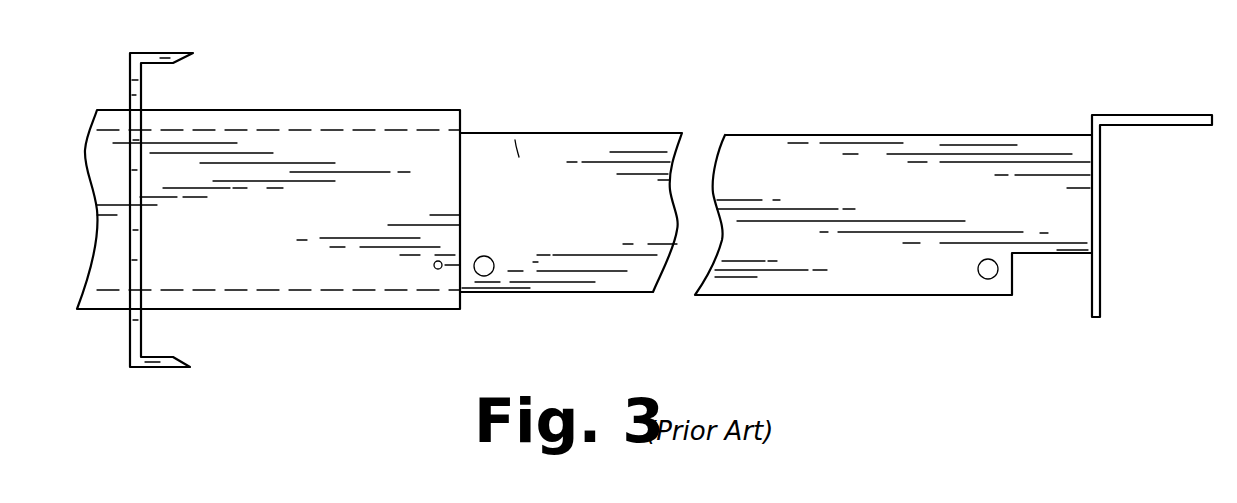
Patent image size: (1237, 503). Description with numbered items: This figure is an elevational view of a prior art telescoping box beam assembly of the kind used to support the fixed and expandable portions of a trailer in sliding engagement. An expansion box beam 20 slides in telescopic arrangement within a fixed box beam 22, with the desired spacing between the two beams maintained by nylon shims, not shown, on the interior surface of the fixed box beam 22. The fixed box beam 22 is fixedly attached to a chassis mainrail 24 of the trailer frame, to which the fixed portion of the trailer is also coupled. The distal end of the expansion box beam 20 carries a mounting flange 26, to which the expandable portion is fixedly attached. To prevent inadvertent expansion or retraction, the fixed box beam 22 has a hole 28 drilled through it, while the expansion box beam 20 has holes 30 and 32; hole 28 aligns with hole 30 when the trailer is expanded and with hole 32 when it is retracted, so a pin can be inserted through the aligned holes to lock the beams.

The expansion box beam 20 is at (572, 133).
The fixed box beam 22 is at (382, 50).
The chassis mainrail 24 is at (160, 53).
The mounting flange 26 is at (1150, 115).
The hole 28 is at (433, 265).
The hole 30 is at (492, 262).
The hole 32 is at (980, 263).